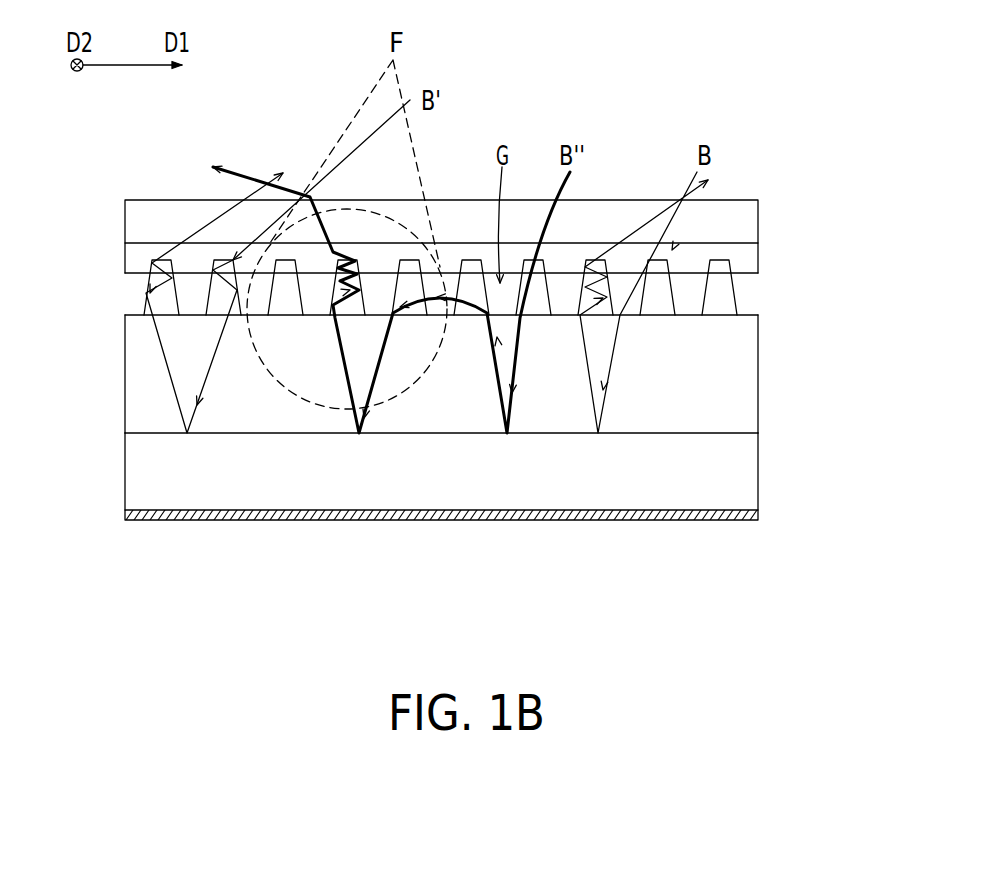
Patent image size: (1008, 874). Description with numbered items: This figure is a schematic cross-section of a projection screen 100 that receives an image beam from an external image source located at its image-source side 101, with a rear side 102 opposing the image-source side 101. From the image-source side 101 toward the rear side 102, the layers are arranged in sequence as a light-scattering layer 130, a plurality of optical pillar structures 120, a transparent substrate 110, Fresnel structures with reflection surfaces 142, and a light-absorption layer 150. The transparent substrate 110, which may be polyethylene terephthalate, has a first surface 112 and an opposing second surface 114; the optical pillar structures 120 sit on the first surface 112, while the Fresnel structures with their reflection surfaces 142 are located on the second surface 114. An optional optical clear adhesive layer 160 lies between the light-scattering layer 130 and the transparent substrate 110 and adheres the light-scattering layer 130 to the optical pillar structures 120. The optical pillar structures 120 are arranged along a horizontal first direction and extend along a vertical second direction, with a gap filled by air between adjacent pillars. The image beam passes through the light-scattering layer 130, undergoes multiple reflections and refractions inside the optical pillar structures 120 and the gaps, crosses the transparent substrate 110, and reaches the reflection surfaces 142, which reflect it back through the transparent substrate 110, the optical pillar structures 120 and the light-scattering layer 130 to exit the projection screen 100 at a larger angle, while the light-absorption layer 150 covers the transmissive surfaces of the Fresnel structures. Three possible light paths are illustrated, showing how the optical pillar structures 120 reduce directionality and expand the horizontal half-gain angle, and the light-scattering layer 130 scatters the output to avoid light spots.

The projection screen 100 is at (859, 629).
The image-source side 101 is at (772, 108).
The rear side 102 is at (775, 531).
The transparent substrate 110 is at (132, 376).
The first surface 112 is at (129, 314).
The second surface 114 is at (128, 436).
The optical pillar structures 120 is at (150, 283).
The light-scattering layer 130 is at (132, 216).
The reflection surface 142 is at (733, 477).
The light-absorption layer 150 is at (128, 513).
The optical clear adhesive layer 160 is at (132, 258).